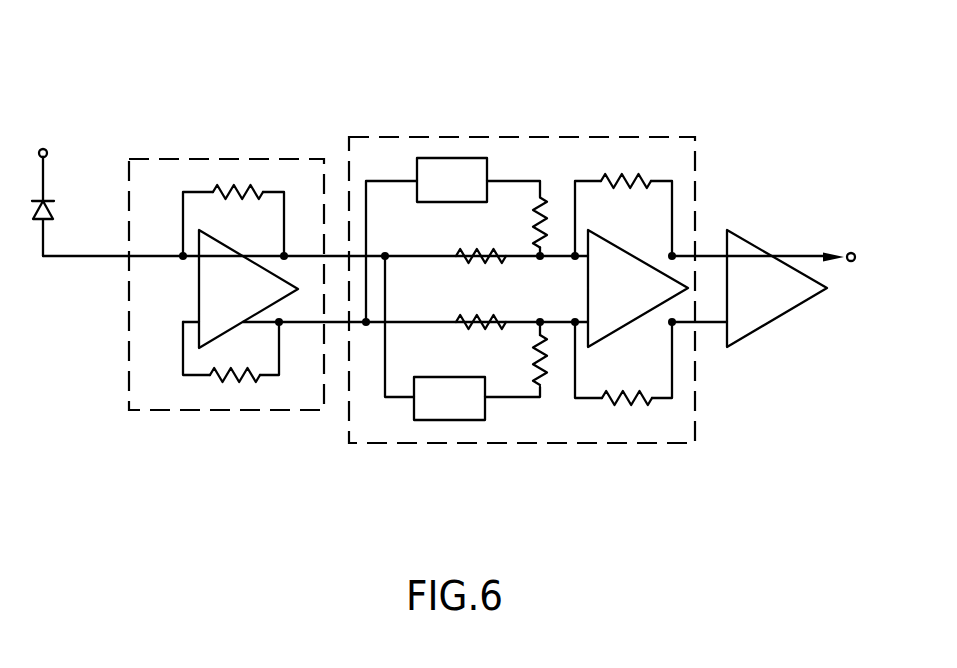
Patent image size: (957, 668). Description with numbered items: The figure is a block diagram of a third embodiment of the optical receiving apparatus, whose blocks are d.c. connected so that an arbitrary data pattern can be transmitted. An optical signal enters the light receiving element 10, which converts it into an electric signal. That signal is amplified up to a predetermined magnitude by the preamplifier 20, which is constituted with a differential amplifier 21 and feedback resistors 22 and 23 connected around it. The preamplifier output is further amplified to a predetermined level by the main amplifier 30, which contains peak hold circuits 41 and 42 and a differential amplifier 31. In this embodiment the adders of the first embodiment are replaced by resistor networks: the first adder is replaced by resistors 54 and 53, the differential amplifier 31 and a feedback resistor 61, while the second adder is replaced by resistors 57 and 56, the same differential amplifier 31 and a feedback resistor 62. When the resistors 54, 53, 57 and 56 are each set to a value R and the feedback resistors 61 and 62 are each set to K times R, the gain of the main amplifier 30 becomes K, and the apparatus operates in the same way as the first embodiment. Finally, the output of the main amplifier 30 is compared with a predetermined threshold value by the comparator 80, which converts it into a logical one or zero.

The light receiving element 10 is at (36, 218).
The preamplifier 20 is at (163, 158).
The differential amplifier 21 is at (198, 297).
The feedback resistor 22 is at (246, 190).
The feedback resistor 23 is at (233, 378).
The main amplifier 30 is at (690, 136).
The differential amplifier 31 is at (620, 327).
The peak hold circuit 41 is at (443, 158).
The peak hold circuit 42 is at (430, 420).
The resistor 53 is at (493, 253).
The resistor 54 is at (547, 230).
The resistor 56 is at (487, 325).
The resistor 57 is at (547, 360).
The feedback resistor 61 is at (630, 173).
The feedback resistor 62 is at (635, 402).
The comparator 80 is at (728, 345).